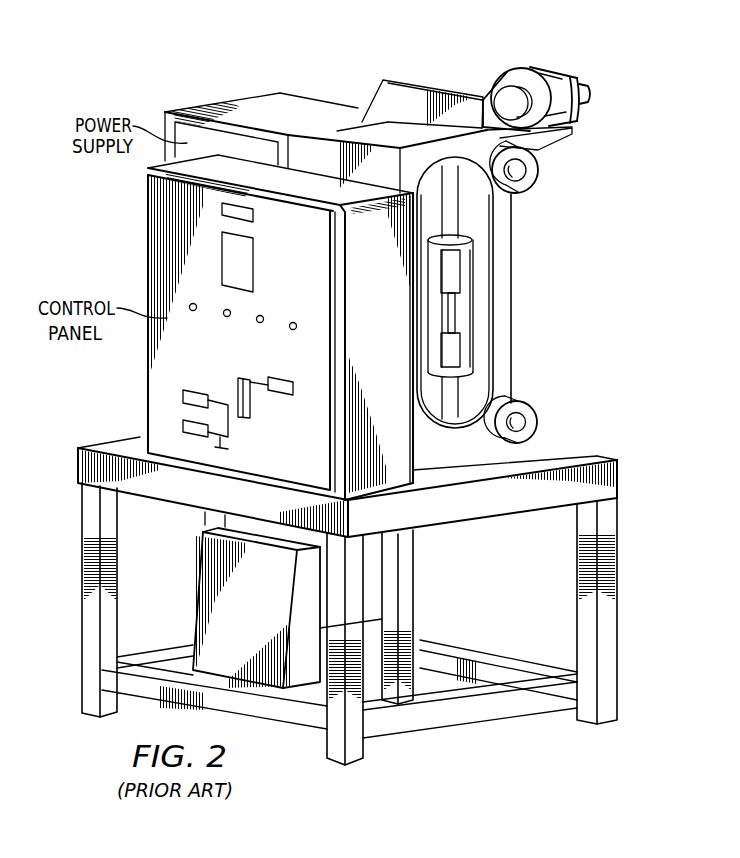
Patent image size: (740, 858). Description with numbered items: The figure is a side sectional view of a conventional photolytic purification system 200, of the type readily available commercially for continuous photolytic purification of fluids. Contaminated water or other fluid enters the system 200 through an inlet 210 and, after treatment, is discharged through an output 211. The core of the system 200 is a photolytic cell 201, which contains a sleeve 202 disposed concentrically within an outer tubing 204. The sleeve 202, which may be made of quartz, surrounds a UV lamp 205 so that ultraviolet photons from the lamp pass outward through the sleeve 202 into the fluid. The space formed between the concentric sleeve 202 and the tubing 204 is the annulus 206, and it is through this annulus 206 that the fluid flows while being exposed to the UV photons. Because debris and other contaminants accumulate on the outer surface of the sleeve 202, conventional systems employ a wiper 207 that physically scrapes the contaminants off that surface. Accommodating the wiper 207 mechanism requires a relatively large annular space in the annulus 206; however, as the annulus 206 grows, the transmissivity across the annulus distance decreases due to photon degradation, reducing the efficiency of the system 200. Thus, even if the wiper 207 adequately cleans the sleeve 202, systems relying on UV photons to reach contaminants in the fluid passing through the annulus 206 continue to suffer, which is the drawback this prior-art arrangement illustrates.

The photolytic purification system 200 is at (337, 62).
The photolytic cell 201 is at (503, 229).
The sleeve 202 is at (462, 383).
The tubing 204 is at (473, 250).
The UV lamp 205 is at (458, 305).
The annulus 206 is at (437, 307).
The wiper 207 is at (462, 272).
The inlet 210 is at (527, 427).
The output 211 is at (518, 174).